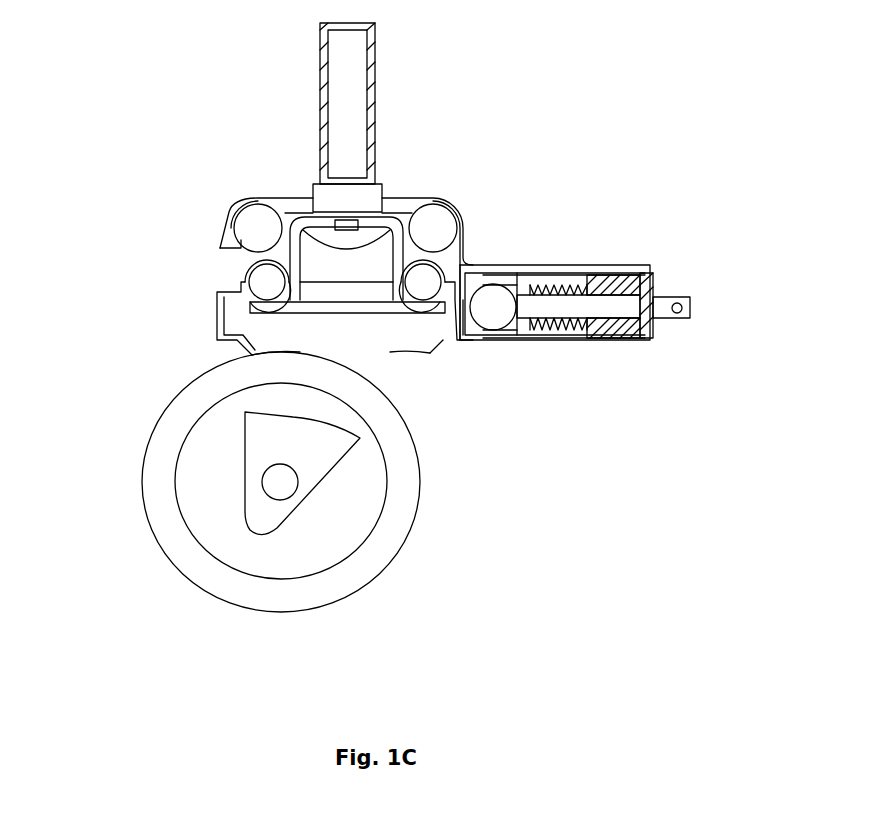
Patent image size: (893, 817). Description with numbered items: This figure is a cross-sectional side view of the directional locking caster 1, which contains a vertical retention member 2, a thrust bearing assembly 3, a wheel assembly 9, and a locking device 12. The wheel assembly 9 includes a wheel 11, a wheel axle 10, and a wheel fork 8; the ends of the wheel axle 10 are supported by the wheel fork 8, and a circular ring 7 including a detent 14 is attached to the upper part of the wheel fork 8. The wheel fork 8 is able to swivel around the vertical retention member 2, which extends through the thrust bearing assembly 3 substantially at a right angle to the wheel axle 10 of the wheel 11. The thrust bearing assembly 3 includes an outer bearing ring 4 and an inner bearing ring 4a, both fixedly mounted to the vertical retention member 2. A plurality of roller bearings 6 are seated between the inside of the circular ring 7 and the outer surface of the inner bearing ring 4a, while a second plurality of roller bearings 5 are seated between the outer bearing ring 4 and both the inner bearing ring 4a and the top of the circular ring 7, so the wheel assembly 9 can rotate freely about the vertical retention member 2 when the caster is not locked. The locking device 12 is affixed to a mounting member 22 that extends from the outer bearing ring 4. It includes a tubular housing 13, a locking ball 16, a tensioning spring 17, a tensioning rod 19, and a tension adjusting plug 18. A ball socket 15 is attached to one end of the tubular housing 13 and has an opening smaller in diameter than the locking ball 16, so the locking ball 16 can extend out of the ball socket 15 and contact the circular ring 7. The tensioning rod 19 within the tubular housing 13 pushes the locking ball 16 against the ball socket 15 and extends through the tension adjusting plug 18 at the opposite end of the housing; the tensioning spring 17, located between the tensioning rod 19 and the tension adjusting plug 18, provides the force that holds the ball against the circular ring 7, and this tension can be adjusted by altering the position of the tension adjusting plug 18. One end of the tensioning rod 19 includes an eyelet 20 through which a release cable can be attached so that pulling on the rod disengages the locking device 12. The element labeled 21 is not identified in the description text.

The directional locking caster 1 is at (125, 160).
The vertical retention member 2 is at (362, 128).
The thrust bearing assembly 3 is at (490, 153).
The outer bearing ring 4 is at (468, 227).
The inner bearing ring 4a is at (300, 262).
The roller bearings 5 is at (258, 228).
The roller bearings 6 is at (265, 282).
The circular ring 7 is at (219, 313).
The wheel fork 8 is at (400, 368).
The wheel assembly 9 is at (103, 442).
The wheel axle 10 is at (287, 482).
The wheel 11 is at (340, 538).
The locking device 12 is at (668, 205).
The tubular housing 13 is at (505, 285).
The detent 14 is at (470, 330).
The ball socket 15 is at (482, 330).
The locking ball 16 is at (500, 322).
The tensioning spring 17 is at (577, 343).
The tension adjusting plug 18 is at (648, 335).
The tensioning rod 19 is at (668, 318).
The eyelet 20 is at (688, 283).
The seal 21 is at (622, 277).
The mounting member 22 is at (570, 275).